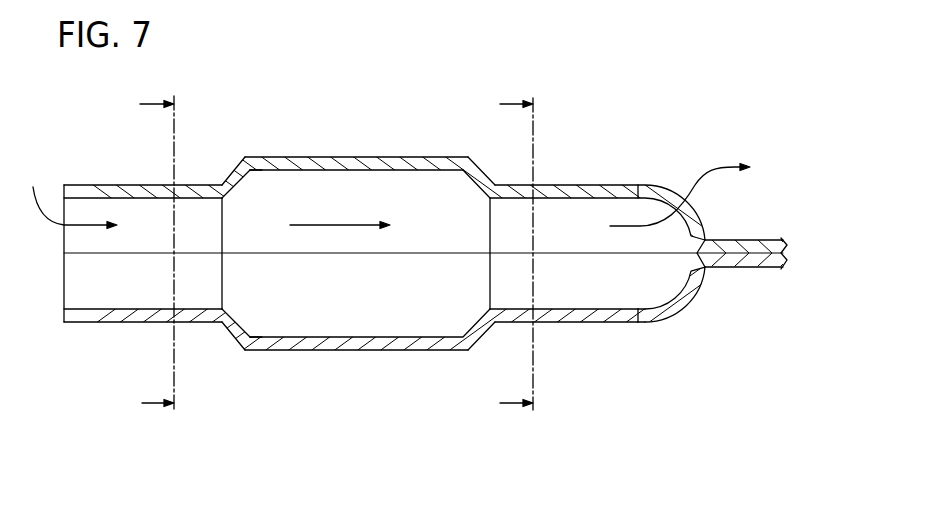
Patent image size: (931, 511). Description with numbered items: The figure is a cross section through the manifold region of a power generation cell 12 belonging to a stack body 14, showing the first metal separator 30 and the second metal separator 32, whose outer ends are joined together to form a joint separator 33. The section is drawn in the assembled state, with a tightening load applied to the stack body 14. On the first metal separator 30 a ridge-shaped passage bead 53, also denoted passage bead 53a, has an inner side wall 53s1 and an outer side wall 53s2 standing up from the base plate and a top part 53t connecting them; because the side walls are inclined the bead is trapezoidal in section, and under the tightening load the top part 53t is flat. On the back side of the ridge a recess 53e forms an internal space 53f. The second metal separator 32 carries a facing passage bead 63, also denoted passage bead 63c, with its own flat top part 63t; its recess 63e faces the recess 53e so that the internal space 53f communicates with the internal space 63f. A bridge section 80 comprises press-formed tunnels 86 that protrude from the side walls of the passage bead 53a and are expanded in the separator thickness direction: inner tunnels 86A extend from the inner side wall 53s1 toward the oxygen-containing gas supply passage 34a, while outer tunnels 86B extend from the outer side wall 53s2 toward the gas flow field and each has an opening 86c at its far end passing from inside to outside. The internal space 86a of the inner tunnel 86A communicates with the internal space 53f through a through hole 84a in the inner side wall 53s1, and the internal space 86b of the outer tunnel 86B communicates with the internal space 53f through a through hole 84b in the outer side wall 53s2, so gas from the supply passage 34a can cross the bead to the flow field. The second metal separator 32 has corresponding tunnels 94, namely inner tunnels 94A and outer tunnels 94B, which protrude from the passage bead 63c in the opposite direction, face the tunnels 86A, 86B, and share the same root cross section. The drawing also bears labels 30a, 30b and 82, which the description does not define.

The power generation cell 12 is at (414, 242).
The stack body 14 is at (414, 242).
The first metal separator 30 is at (746, 266).
The wire outer surface 30a is at (756, 239).
The wire core 30b is at (738, 258).
The second metal separator 32 is at (763, 280).
The joint separator 33 is at (723, 139).
The oxygen-containing gas supply passage 34a is at (52, 208).
The passage bead 53 is at (351, 129).
The passage bead 53a is at (351, 144).
The recess 53e is at (278, 147).
The internal space 53f is at (396, 183).
The inner side wall 53s1 is at (233, 168).
The outer side wall 53s2 is at (482, 166).
The top part 53t is at (353, 156).
The passage bead 63 is at (453, 357).
The passage bead 63c is at (453, 357).
The recess 63e is at (328, 348).
The internal space 63f is at (441, 316).
The top part 63t is at (337, 351).
The bridge section 80 is at (667, 209).
The curved tube end 82 is at (671, 232).
The through hole 84a is at (216, 222).
The through hole 84b is at (500, 223).
The tunnels 86 is at (401, 254).
The inner tunnels 86A is at (137, 184).
The outer tunnels 86B is at (600, 197).
The internal space 86a is at (100, 245).
The internal space 86b is at (553, 228).
The opening 86c is at (663, 198).
The tunnels 94 is at (453, 328).
The inner tunnels 94A is at (202, 323).
The outer tunnels 94B is at (629, 313).